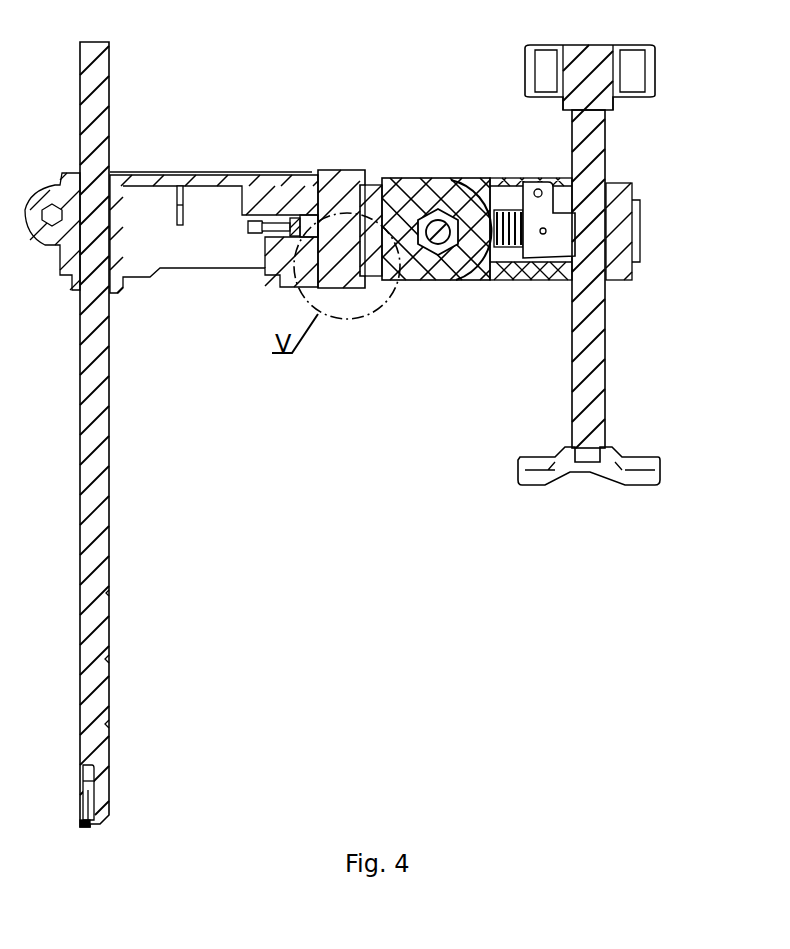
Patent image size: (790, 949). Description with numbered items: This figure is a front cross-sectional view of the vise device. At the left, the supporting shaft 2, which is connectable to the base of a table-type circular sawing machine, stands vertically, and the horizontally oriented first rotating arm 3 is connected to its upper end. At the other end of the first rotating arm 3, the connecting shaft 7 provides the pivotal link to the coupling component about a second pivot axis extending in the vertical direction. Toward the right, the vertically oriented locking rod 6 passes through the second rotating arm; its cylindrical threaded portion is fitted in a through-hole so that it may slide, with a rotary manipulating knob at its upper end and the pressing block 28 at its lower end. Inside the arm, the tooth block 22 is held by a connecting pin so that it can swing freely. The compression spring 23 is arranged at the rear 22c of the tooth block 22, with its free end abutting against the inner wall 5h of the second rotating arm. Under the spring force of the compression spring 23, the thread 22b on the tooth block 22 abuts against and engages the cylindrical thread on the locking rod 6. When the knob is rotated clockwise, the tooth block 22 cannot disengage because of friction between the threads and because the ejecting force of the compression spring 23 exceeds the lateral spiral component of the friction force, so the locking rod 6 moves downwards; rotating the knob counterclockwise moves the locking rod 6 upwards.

The supporting shaft 2 is at (90, 470).
The first rotating arm 3 is at (203, 205).
The connecting shaft 7 is at (330, 180).
The compression spring 23 is at (480, 180).
The tooth block 22 is at (602, 169).
The rear of the tooth block 22c is at (532, 188).
The thread on the tooth block 22b is at (578, 240).
The inner wall of the second rotating arm 5h is at (500, 237).
The locking rod 6 is at (595, 323).
The pressing block 28 is at (653, 470).